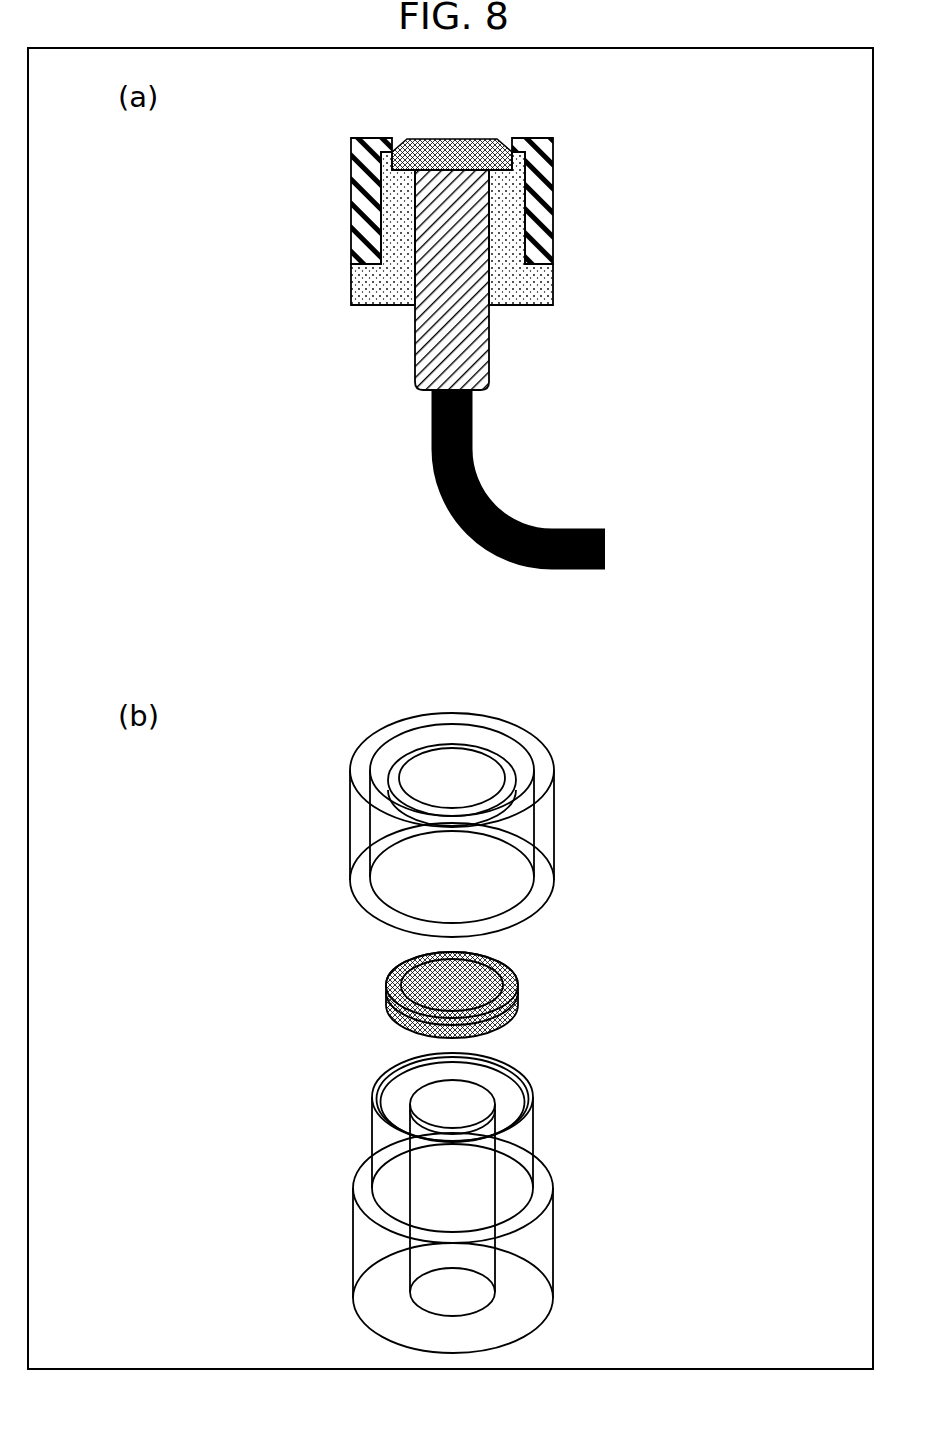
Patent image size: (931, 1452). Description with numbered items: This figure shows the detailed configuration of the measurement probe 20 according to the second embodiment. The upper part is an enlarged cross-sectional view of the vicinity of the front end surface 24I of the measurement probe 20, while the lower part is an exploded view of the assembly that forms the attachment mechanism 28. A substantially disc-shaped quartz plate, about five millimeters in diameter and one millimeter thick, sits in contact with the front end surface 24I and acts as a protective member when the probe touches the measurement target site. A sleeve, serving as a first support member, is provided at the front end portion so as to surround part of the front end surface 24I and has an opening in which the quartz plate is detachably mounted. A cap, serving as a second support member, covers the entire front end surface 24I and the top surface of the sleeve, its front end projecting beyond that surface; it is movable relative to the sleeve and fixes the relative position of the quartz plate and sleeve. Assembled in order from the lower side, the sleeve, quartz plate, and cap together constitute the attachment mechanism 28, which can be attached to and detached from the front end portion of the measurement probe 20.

The measurement probe 20 is at (342, 362).
The front end surface 24I is at (456, 168).
The attachment mechanism 28 is at (590, 724).